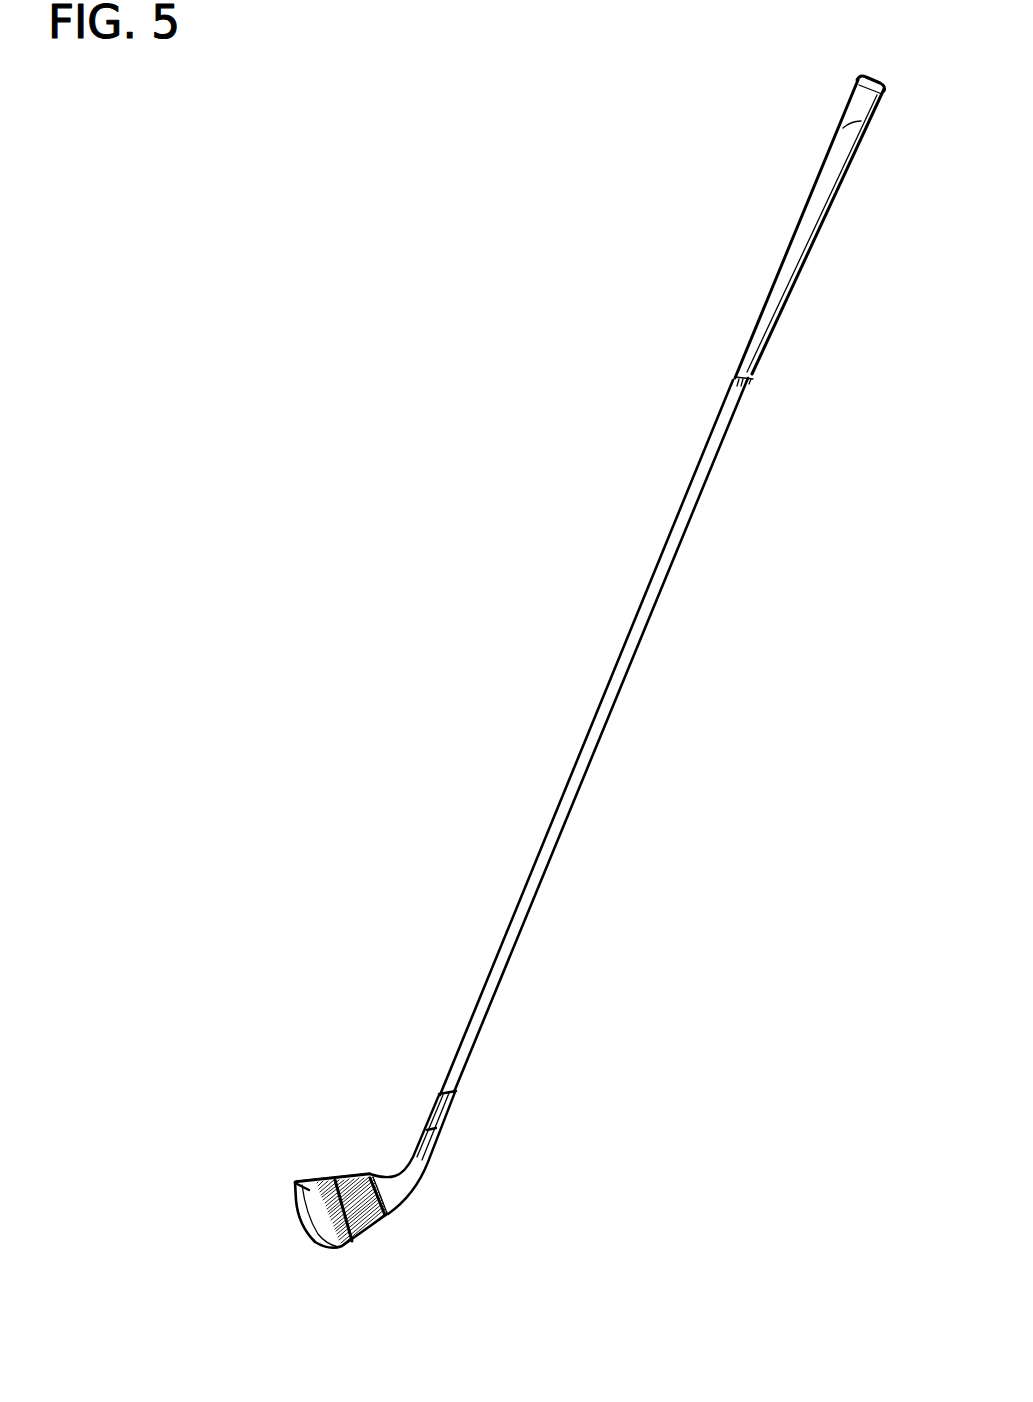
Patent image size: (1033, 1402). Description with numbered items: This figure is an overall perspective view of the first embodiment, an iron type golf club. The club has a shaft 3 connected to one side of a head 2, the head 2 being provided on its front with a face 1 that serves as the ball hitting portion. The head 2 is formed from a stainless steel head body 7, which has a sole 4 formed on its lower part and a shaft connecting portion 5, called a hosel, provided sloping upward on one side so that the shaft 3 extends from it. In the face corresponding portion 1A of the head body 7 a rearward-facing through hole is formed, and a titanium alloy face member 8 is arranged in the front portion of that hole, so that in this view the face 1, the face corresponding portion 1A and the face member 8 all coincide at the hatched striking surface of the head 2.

The face 1 is at (476, 1213).
The face corresponding portion 1A is at (476, 1213).
The face member 8 is at (383, 1217).
The head 2 is at (323, 1178).
The shaft 3 is at (583, 787).
The sole 4 is at (368, 1230).
The shaft connecting portion 5 is at (438, 1155).
The head body 7 is at (305, 1238).